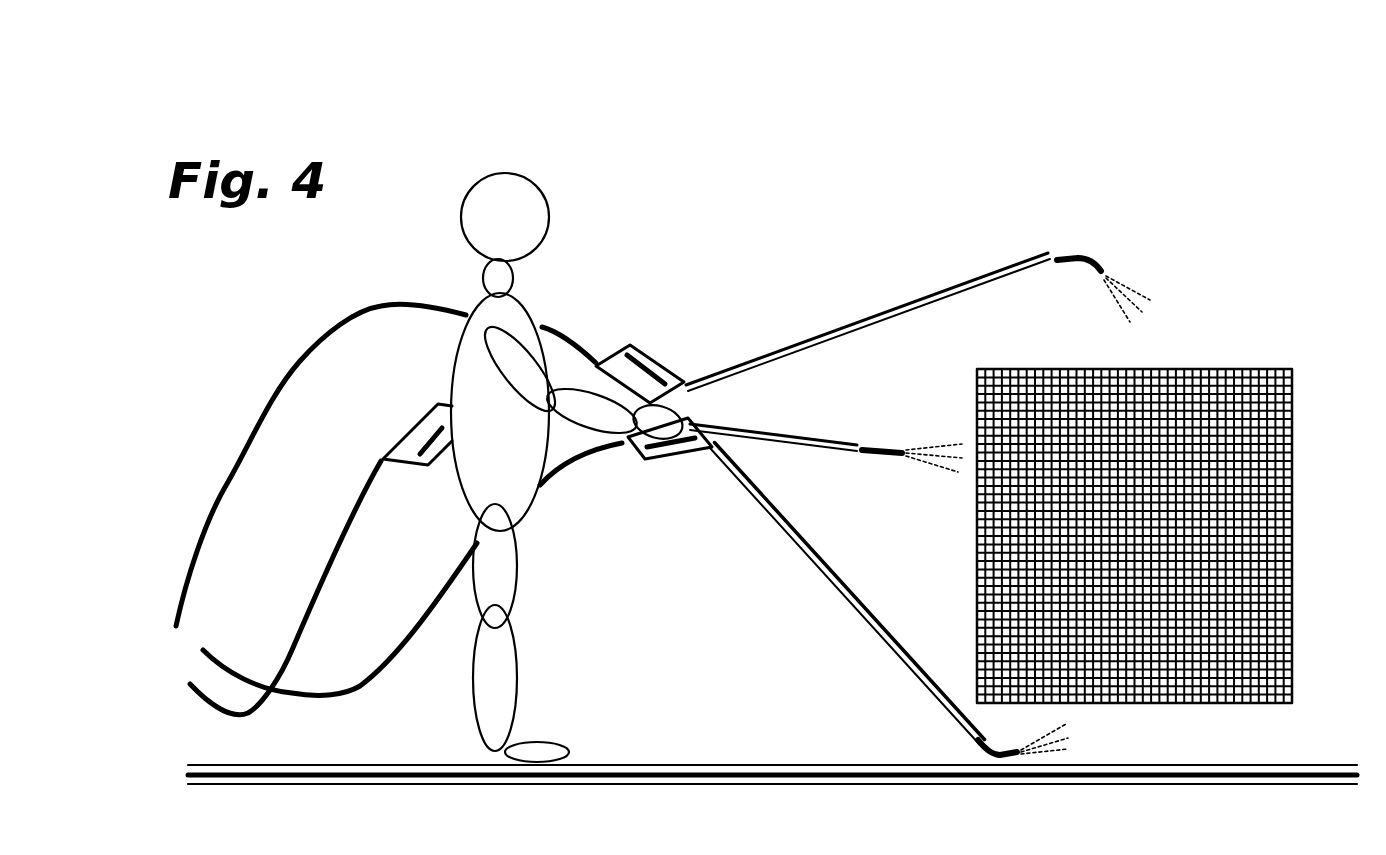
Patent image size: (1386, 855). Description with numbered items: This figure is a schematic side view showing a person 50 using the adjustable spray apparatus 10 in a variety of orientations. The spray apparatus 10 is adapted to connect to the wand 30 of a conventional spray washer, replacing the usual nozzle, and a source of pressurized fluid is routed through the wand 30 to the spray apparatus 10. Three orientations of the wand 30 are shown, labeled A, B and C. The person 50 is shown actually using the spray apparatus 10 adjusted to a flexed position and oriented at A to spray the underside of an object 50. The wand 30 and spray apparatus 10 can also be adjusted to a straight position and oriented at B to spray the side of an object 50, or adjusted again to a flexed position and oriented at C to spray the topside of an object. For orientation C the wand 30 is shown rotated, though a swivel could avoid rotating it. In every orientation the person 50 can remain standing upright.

The spray apparatus 10 is at (1087, 252).
The wand 30 is at (793, 343).
The person 50 is at (455, 346).